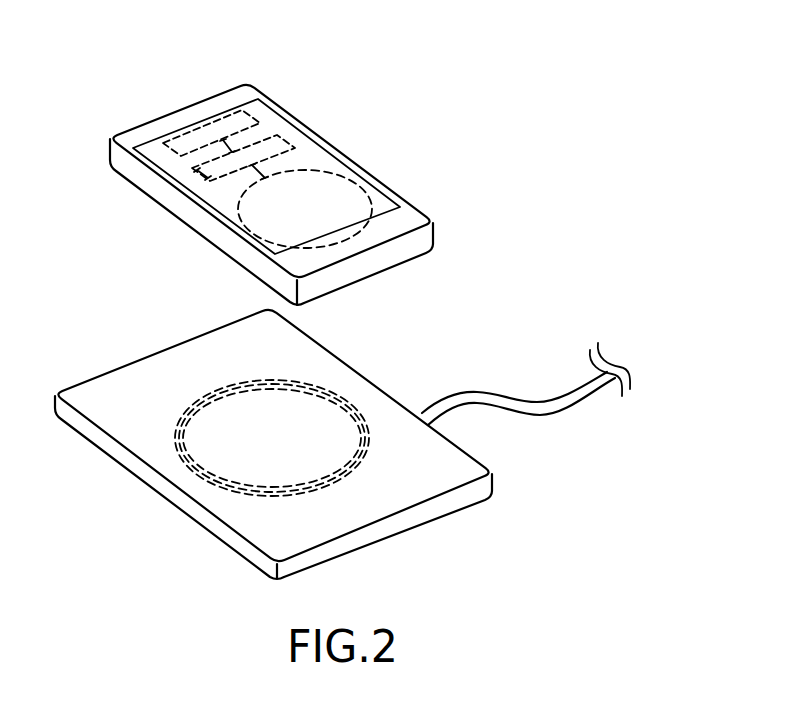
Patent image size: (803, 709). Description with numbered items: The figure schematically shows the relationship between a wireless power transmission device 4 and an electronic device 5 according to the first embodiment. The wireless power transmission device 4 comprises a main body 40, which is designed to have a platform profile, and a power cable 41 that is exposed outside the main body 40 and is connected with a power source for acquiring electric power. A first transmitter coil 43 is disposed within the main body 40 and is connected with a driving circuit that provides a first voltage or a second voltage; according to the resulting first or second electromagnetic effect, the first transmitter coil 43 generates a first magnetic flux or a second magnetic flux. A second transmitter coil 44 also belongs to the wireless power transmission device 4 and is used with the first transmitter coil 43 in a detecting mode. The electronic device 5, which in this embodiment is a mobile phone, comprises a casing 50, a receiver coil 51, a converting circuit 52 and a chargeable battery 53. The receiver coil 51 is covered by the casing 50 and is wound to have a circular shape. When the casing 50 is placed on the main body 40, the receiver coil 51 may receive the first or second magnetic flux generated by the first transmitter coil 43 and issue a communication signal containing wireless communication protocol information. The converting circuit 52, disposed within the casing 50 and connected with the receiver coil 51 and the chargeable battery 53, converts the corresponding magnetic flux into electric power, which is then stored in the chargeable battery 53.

The wireless power transmission device 4 is at (457, 502).
The main body 40 is at (352, 390).
The power cable 41 is at (557, 407).
The first transmitter coil 43 is at (262, 387).
The second transmitter coil 44 is at (182, 422).
The electronic device 5 is at (295, 123).
The casing 50 is at (225, 100).
The receiver coil 51 is at (358, 185).
The converting circuit 52 is at (205, 173).
The chargeable battery 53 is at (195, 138).